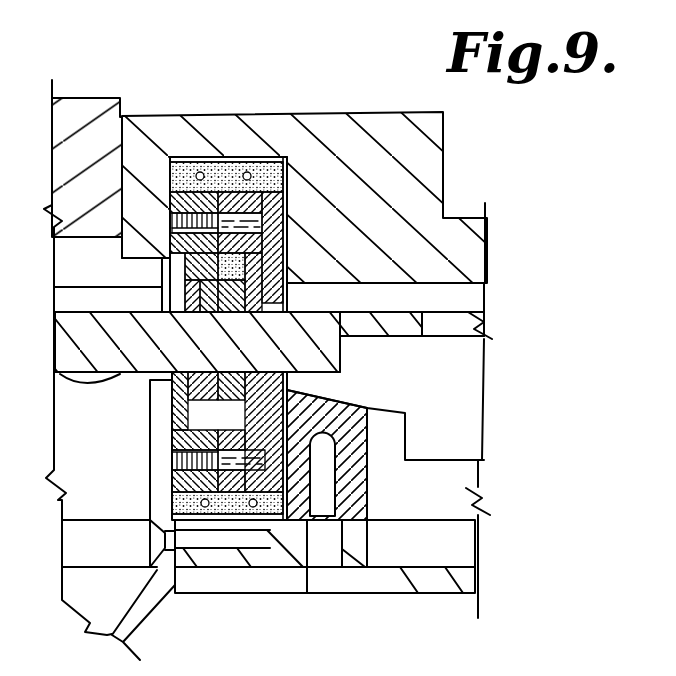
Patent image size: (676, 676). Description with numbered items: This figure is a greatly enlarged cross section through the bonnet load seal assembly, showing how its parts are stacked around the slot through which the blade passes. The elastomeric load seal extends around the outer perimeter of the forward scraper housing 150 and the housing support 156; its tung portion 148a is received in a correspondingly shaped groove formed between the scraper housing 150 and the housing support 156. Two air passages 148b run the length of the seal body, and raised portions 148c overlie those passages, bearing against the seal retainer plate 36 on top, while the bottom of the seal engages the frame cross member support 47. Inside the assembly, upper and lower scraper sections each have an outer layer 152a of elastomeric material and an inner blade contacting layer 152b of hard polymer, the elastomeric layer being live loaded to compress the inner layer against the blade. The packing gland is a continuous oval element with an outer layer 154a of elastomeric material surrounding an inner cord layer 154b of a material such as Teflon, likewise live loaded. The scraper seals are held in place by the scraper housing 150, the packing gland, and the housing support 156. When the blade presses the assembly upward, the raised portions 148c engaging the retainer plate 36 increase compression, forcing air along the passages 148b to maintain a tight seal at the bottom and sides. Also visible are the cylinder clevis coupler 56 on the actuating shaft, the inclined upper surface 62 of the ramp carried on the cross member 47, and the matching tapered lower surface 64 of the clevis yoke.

The seal retainer plate 36 is at (388, 122).
The frame cross member support 47 is at (273, 562).
The cylinder clevis coupler 56 is at (460, 412).
The inclined upper surface 62 is at (320, 391).
The tapered lower surface 64 is at (390, 412).
The tung portion 148a is at (200, 196).
The air passages 148b is at (204, 173).
The raised portions 148c is at (238, 158).
The forward scraper housing 150 is at (178, 288).
The outer layer of elastomeric material 152a is at (190, 258).
The inner blade contacting layer 152b is at (222, 384).
The outer layer of elastomeric material 154a is at (240, 265).
The inner blade contacting layer of cord 154b is at (232, 384).
The housing support 156 is at (285, 193).